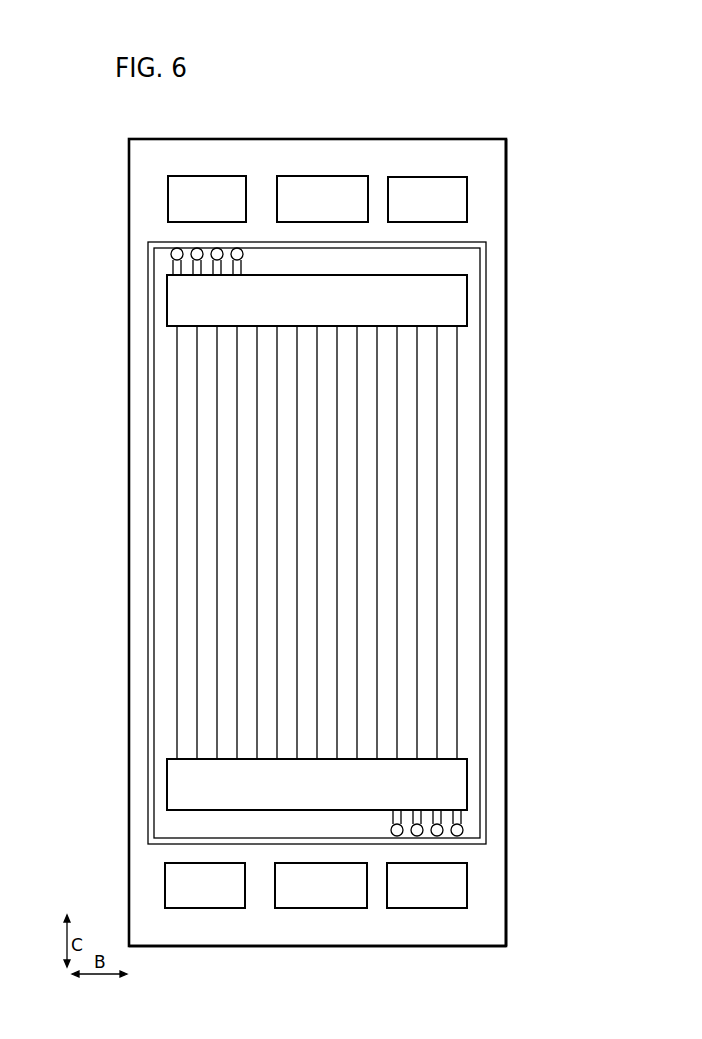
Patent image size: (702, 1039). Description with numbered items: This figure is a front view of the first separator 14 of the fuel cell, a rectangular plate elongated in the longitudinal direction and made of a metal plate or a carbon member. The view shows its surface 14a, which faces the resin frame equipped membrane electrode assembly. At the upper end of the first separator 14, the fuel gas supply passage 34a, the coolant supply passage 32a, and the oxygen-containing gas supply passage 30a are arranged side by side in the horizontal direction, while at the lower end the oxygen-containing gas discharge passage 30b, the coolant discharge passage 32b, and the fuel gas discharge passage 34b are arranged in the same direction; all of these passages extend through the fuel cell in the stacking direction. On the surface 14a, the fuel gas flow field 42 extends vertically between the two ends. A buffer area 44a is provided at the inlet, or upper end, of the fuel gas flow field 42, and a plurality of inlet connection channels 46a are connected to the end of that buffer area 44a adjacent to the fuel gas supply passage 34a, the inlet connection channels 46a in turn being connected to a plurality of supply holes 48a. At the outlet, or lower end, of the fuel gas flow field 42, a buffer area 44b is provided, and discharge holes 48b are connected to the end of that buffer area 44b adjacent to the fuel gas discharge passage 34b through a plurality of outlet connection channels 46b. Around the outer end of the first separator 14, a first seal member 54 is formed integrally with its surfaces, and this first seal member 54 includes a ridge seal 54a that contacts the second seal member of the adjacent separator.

The first separator 14 is at (264, 95).
The surface of the first separator 14a is at (495, 897).
The oxygen-containing gas supply passage 30a is at (408, 189).
The oxygen-containing gas discharge passage 30b is at (190, 895).
The coolant supply passage 32a is at (297, 185).
The coolant discharge passage 32b is at (300, 897).
The fuel gas supply passage 34a is at (187, 190).
The fuel gas discharge passage 34b is at (408, 895).
The fuel gas flow field 42 is at (420, 412).
The buffer area 44a is at (452, 298).
The buffer area 44b is at (452, 776).
The inlet connection channels 46a is at (175, 268).
The outlet connection channels 46b is at (462, 817).
The supply holes 48a is at (171, 254).
The discharge holes 48b is at (464, 830).
The first seal member 54 is at (508, 226).
The ridge seal 54a is at (484, 350).